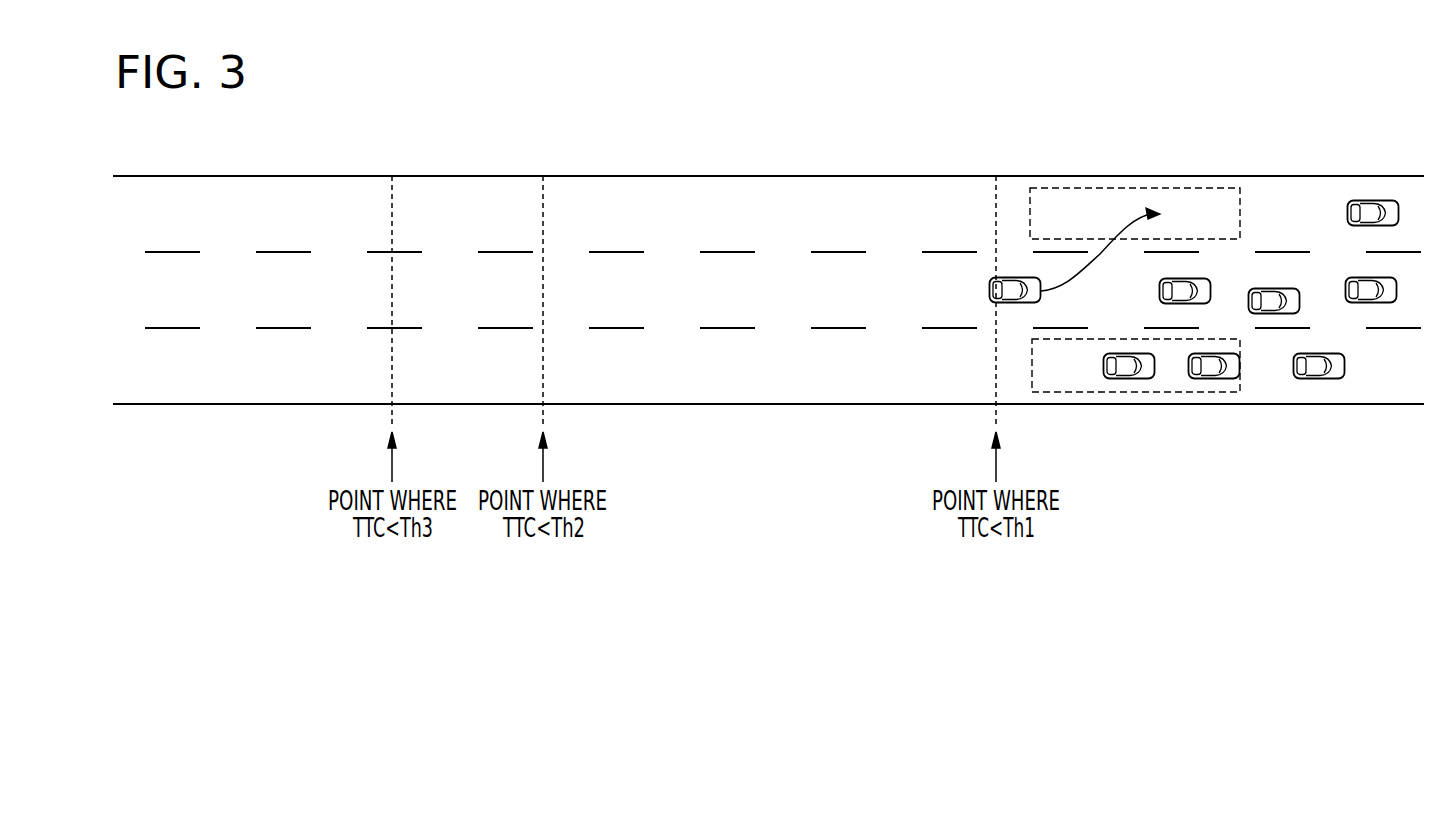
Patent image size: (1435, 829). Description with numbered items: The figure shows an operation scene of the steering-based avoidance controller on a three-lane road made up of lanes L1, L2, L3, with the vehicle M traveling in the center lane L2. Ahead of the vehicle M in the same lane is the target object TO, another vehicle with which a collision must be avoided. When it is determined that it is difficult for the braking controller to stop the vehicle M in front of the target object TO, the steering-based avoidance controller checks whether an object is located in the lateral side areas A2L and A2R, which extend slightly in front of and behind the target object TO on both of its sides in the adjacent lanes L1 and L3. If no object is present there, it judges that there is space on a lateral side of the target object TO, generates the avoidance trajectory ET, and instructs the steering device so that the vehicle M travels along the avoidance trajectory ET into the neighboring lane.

The lane L1 is at (142, 232).
The lane L2 is at (142, 309).
The lane L3 is at (142, 384).
The vehicle M is at (988, 291).
The target object TO is at (1184, 280).
The avoidance trajectory ET is at (1095, 273).
The area A2L is at (1077, 196).
The area A2R is at (1078, 384).